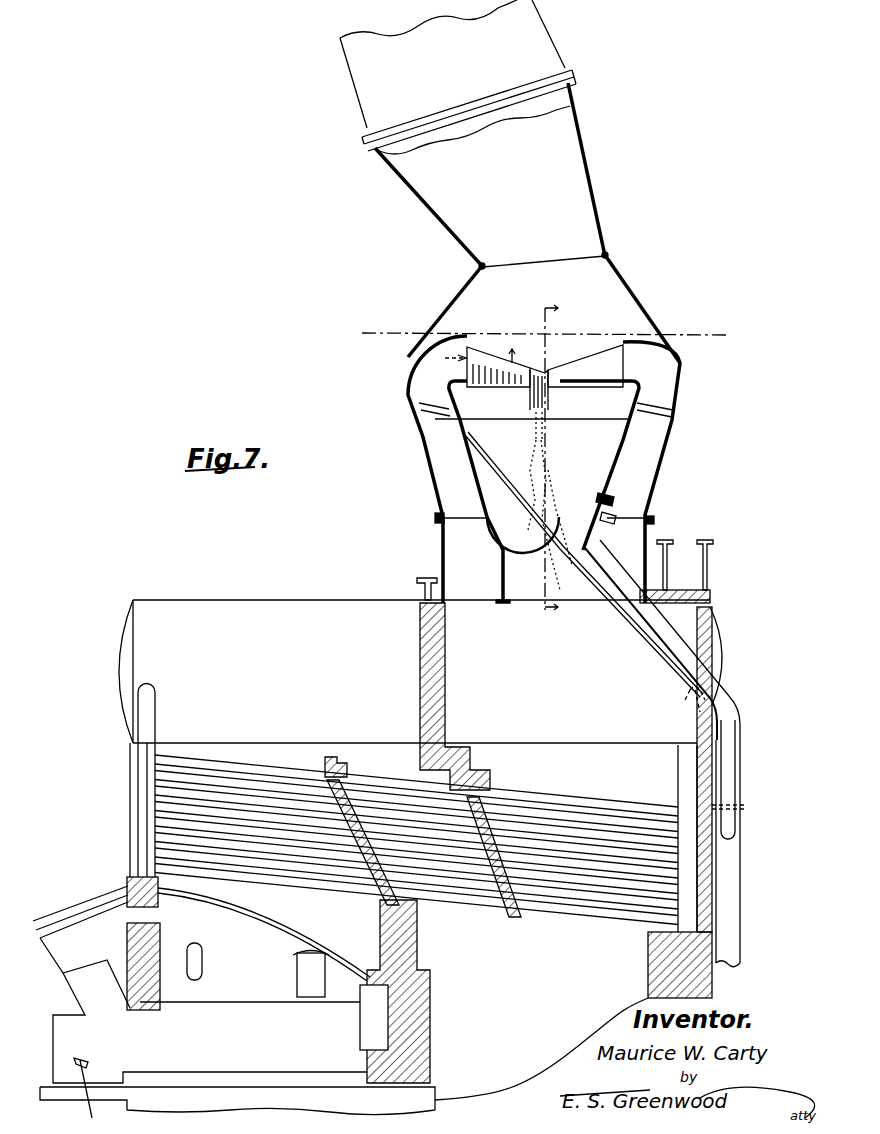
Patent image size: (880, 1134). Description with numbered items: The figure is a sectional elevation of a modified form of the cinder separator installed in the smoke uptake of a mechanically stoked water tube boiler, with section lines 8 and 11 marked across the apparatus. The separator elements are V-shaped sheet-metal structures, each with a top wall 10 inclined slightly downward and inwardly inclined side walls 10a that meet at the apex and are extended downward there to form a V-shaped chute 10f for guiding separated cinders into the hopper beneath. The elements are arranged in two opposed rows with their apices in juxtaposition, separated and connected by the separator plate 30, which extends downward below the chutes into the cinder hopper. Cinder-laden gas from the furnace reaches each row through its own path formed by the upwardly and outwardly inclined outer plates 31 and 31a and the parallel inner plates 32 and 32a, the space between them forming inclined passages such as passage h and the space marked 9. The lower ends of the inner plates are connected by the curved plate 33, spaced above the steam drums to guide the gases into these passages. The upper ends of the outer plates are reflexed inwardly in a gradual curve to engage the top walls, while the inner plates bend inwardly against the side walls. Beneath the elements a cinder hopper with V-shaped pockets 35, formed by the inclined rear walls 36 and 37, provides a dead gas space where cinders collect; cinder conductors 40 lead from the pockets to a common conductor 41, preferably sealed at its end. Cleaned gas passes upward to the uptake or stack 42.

The section line 8- 8 is at (543, 334).
The annular chamber between casing and funnel 9 is at (432, 430).
The top wall 10 is at (590, 356).
The side walls 10a is at (621, 331).
The V-shaped chute 10f is at (550, 404).
The section line 11- 11 is at (546, 461).
The separator plate 30 is at (550, 432).
The outer plate 31 is at (425, 450).
The outer plate 31a is at (668, 438).
The inner plate 32 is at (467, 460).
The inner plate 32a is at (617, 467).
The curved plate 33 is at (513, 540).
The V-shaped pocket 35 is at (556, 515).
The rear wall 36 is at (584, 564).
The rear wall 37 is at (605, 500).
The cinder conductor 40 is at (603, 578).
The common conductor 41 is at (733, 860).
The uptake or stack 42 is at (632, 293).
The passage h is at (643, 451).